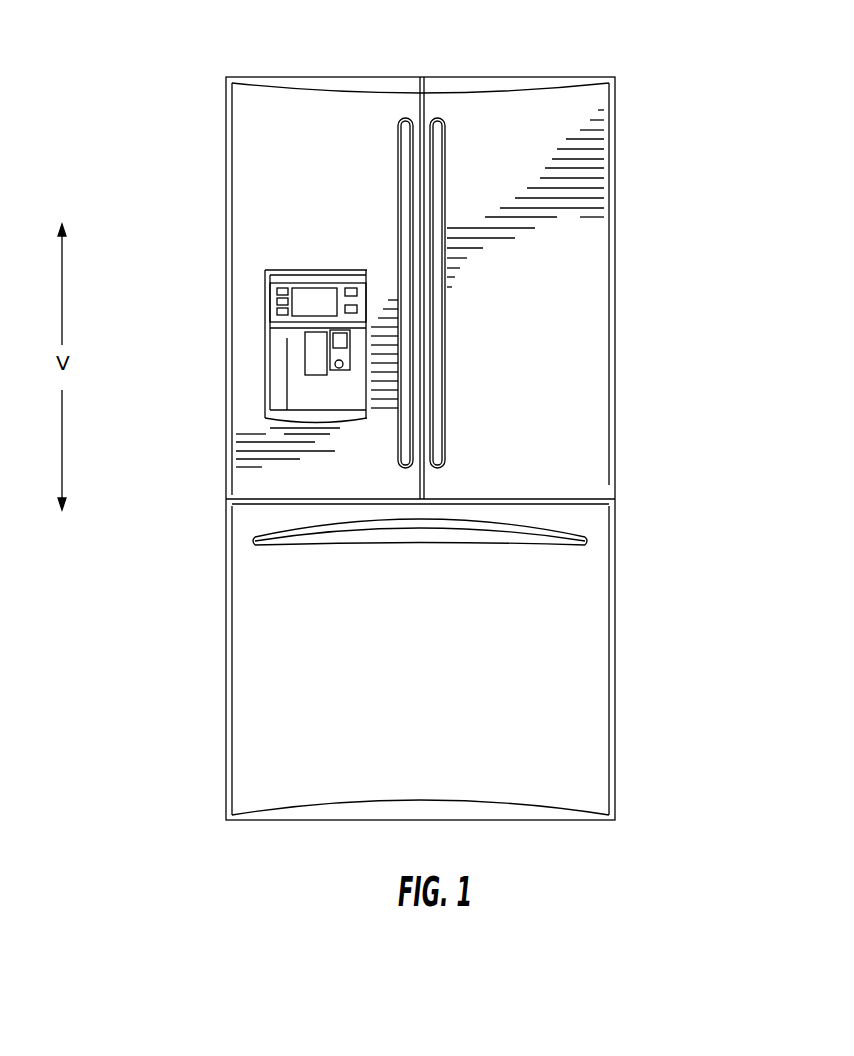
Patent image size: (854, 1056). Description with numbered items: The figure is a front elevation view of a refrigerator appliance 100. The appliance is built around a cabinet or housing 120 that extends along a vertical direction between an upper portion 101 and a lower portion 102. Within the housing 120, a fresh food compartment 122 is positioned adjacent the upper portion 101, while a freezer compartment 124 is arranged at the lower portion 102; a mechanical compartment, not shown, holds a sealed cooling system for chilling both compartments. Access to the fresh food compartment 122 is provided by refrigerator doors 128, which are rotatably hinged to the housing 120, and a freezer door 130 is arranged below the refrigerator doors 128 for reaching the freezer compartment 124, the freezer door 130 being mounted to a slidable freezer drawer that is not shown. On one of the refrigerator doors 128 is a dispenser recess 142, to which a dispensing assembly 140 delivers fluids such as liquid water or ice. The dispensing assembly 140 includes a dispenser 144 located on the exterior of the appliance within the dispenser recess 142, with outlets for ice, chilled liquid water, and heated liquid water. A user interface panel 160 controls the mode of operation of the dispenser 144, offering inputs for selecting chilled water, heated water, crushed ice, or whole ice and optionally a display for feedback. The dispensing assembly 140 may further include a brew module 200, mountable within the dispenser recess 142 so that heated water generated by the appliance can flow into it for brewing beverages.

The refrigerator appliance 100 is at (146, 97).
The upper portion 101 is at (618, 82).
The lower portion 102 is at (620, 805).
The housing 120 is at (613, 499).
The fresh food compartment 122 is at (558, 361).
The freezer compartment 124 is at (558, 632).
The refrigerator doors 128 is at (265, 148).
The freezer door 130 is at (292, 645).
The dispensing assembly 140 is at (250, 341).
The dispenser recess 142 is at (290, 376).
The dispenser 144 is at (280, 271).
The user interface panel 160 is at (338, 280).
The brew module 200 is at (346, 352).